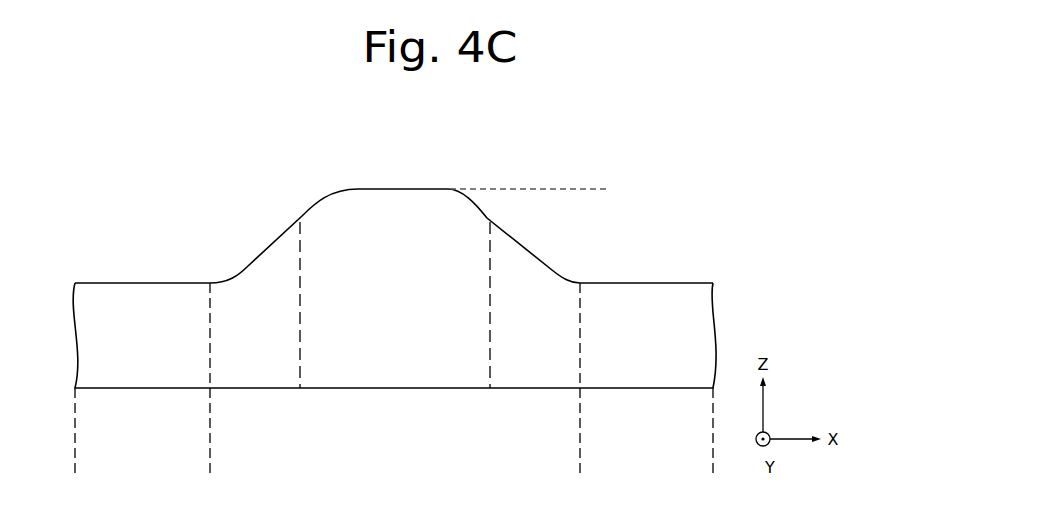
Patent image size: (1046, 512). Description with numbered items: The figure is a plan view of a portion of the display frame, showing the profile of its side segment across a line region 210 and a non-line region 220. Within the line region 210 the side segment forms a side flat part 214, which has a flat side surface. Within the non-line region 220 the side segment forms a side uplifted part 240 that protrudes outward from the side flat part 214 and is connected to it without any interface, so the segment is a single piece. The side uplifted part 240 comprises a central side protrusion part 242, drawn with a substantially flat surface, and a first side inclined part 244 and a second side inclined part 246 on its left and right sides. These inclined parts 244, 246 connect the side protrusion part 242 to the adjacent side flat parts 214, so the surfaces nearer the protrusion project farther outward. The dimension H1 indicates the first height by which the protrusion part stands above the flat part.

The line region 210 is at (204, 459).
The non-line region 220 is at (216, 459).
The side flat part 214 is at (145, 296).
The side uplifted part 240 is at (395, 197).
The side protrusion part 242 is at (390, 205).
The first side inclined part 244 is at (261, 265).
The second side inclined part 246 is at (514, 213).
The first height H1 is at (601, 196).